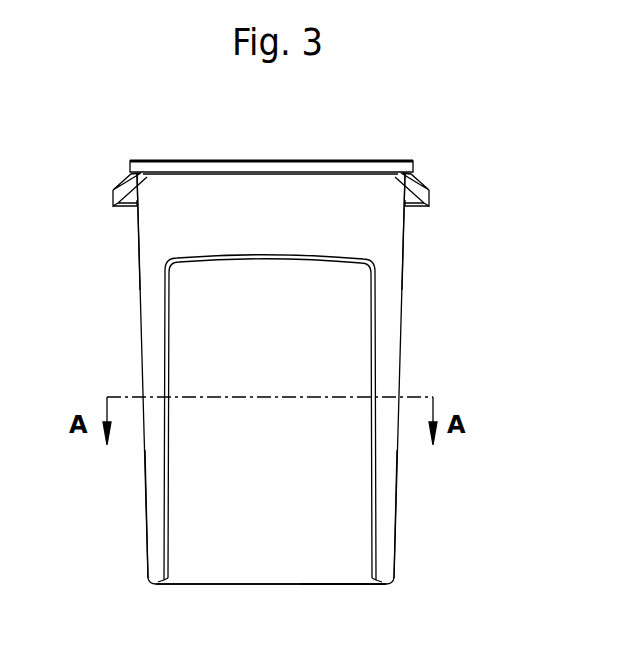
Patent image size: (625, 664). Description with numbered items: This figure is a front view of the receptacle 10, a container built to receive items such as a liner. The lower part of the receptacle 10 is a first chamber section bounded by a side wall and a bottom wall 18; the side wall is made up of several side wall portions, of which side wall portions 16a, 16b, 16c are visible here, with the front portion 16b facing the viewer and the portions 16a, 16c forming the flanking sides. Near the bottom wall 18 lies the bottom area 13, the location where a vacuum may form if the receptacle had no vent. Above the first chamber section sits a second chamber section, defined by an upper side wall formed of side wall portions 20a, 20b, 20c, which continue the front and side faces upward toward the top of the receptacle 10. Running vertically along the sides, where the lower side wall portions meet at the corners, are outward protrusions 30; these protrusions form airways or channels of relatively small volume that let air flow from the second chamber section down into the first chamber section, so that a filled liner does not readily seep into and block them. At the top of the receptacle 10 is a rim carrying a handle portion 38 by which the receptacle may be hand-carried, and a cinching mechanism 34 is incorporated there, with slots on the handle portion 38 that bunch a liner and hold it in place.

The receptacle 10 is at (522, 144).
The bottom area 13 is at (319, 568).
The side wall portion 16a is at (395, 531).
The side wall portion 16b is at (294, 520).
The side wall portion 16c is at (148, 531).
The bottom wall 18 is at (237, 586).
The side wall portion 20a is at (403, 242).
The side wall portion 20b is at (294, 226).
The side wall portion 20c is at (139, 242).
The outward protrusion 30 is at (150, 318).
The cinching mechanism 34 is at (290, 160).
The handle portion 38 is at (113, 192).